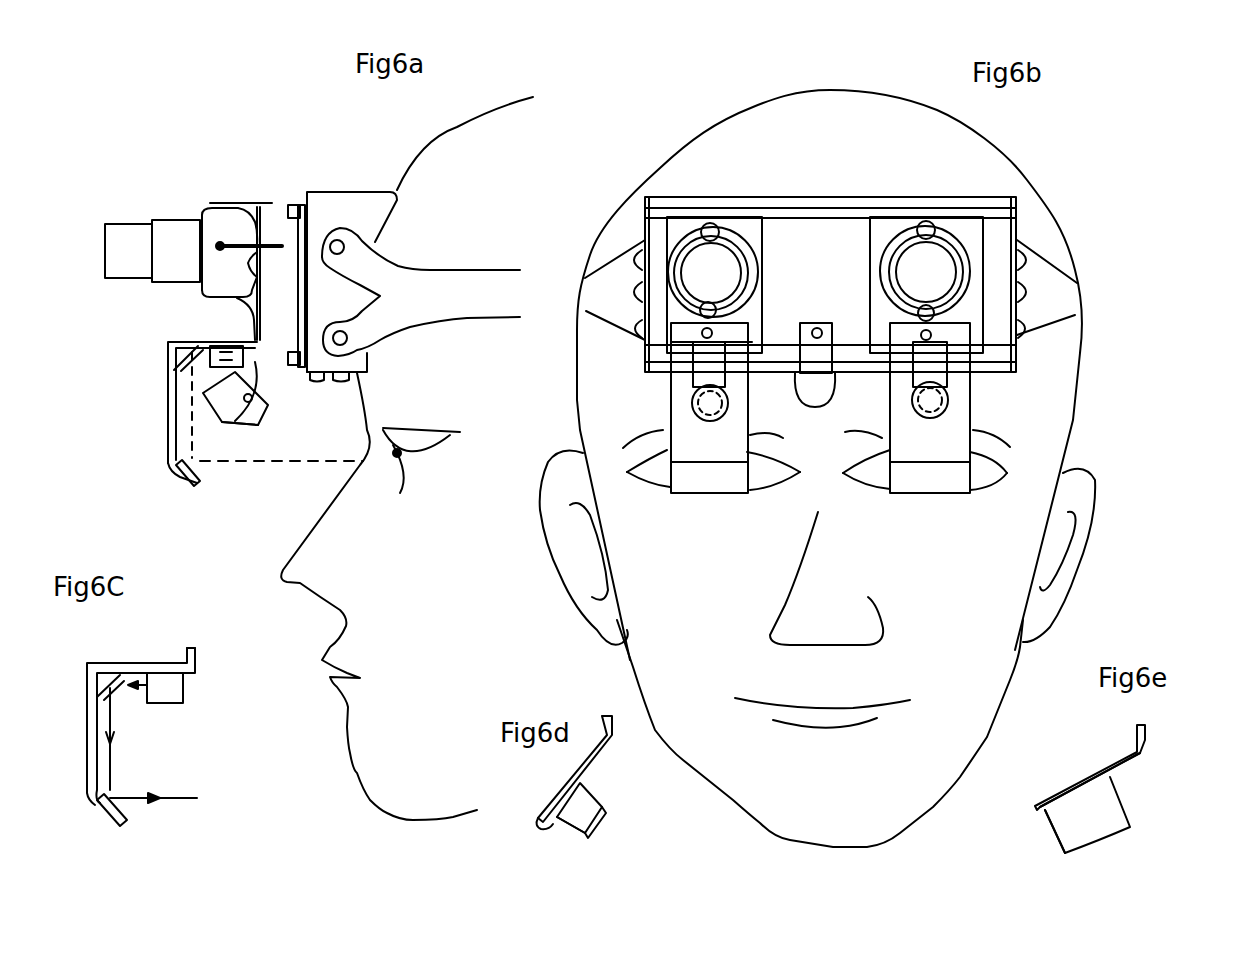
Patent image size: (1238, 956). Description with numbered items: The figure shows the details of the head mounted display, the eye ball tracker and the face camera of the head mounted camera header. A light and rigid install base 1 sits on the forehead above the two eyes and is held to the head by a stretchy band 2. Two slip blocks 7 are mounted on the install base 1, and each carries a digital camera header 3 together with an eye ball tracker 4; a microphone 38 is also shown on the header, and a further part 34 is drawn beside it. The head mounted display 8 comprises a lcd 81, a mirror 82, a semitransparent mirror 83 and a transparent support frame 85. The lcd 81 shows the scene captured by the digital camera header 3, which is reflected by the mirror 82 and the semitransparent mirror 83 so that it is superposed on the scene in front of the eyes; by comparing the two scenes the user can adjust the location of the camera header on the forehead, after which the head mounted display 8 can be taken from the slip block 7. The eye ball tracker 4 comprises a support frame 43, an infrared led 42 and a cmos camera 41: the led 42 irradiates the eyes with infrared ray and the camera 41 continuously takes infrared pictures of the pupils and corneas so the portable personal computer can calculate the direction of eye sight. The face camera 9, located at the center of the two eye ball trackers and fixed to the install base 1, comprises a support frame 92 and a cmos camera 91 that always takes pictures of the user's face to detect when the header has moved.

In FIG. 6A, the install base 1 is at (337, 210).
In FIG. 6B, the install base 1 is at (803, 198).
In FIG. 6A, the stretchy band 2 is at (400, 285).
In FIG. 6B, the stretchy band 2 is at (1043, 295).
In FIG. 6A, the digital camera header 3 is at (220, 227).
In FIG. 6B, the digital camera header 3 is at (677, 245).
In FIG. 6A, the eye ball tracker 4 is at (251, 435).
In FIG. 6B, the eye ball tracker 4 is at (690, 405).
In FIG. 6D, the eye ball tracker 4 is at (625, 820).
In FIG. 6A, the slip block 7 is at (275, 230).
In FIG. 6B, the slip block 7 is at (670, 317).
In FIG. 6A, the head mounted display 8 is at (212, 412).
In FIG. 6B, the head mounted display 8 is at (663, 500).
In FIG. 6C, the head mounted display 8 is at (150, 755).
In FIG. 6A, the face camera 9 is at (207, 410).
In FIG. 6B, the face camera 9 is at (828, 317).
In FIG. 6E, the face camera 9 is at (1083, 750).
In FIG. 6A, the tab 34 is at (338, 385).
In FIG. 6A, the microphone 38 is at (318, 380).
In FIG. 6D, the cmos camera 41 is at (577, 815).
In FIG. 6D, the infrared led 42 is at (552, 828).
In FIG. 6D, the support frame 43 is at (587, 772).
In FIG. 6A, the lcd 81 is at (210, 340).
In FIG. 6C, the lcd 81 is at (167, 690).
In FIG. 6A, the mirror 82 is at (168, 362).
In FIG. 6C, the mirror 82 is at (120, 683).
In FIG. 6A, the semitransparent mirror 83 is at (180, 475).
In FIG. 6C, the semitransparent mirror 83 is at (110, 820).
In FIG. 6A, the transparent support frame 85 is at (170, 388).
In FIG. 6C, the transparent support frame 85 is at (87, 727).
In FIG. 6E, the cmos camera 91 is at (1110, 818).
In FIG. 6E, the support frame 92 is at (1140, 760).